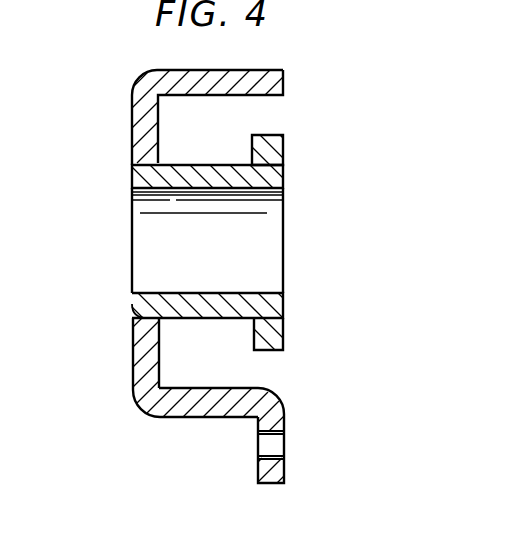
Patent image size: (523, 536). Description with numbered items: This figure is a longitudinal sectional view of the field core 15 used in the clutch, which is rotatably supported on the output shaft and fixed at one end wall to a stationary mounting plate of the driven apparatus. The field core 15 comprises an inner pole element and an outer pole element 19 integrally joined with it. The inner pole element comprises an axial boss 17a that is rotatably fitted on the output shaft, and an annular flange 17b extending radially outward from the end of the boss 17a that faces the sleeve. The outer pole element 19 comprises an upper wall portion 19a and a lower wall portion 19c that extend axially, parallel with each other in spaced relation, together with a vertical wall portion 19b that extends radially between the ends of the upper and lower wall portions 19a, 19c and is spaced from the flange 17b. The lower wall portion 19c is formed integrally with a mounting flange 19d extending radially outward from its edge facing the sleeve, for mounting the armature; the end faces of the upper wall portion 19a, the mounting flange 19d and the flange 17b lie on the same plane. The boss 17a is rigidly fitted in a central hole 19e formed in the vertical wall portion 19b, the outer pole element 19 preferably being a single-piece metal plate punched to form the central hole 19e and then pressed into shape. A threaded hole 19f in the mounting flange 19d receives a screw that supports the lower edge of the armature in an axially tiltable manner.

The field core 15 is at (332, 238).
The axial boss 17a is at (203, 307).
The annular flange 17b is at (280, 162).
The outer pole element 19 is at (126, 93).
The upper wall portion 19a is at (247, 73).
The vertical wall portion 19b is at (141, 353).
The lower wall portion 19c is at (210, 410).
The mounting flange 19d is at (267, 473).
The central hole 19e is at (130, 306).
The threaded hole 19f is at (274, 438).